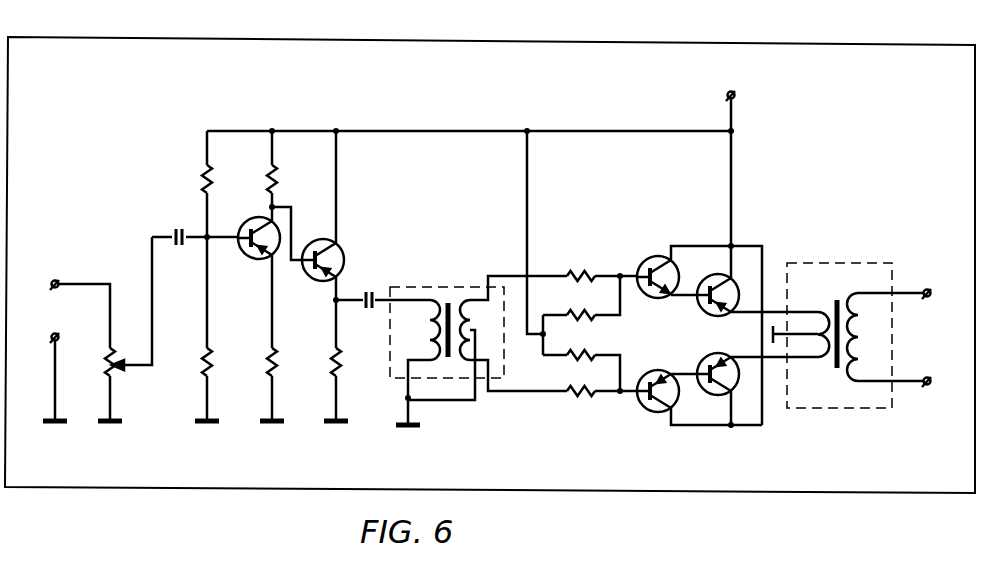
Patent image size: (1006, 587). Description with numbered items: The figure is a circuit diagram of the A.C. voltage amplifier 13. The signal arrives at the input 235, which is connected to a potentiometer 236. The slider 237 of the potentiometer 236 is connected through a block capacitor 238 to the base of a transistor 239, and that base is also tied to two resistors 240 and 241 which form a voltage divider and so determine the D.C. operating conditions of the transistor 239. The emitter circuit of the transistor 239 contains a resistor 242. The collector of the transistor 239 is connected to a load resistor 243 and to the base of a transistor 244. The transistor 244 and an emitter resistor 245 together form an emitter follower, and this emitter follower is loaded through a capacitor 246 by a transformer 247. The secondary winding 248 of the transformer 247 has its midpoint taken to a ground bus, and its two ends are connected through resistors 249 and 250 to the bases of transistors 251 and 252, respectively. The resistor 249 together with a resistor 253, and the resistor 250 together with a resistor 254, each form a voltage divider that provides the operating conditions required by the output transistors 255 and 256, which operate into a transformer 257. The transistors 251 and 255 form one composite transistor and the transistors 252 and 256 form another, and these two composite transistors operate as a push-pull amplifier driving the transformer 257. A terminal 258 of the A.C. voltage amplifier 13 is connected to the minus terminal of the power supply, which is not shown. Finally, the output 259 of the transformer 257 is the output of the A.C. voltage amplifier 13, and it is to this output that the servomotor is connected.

The A.C. voltage amplifier 13 is at (978, 136).
The input 235 is at (50, 299).
The potentiometer 236 is at (104, 355).
The slider 237 is at (143, 368).
The block capacitor 238 is at (172, 235).
The transistor 239 is at (262, 258).
The resistor 240 is at (203, 179).
The resistor 241 is at (203, 360).
The resistor 242 is at (269, 370).
The load resistor 243 is at (268, 184).
The transistor 244 is at (343, 257).
The emitter resistor 245 is at (333, 370).
The capacitor 246 is at (367, 304).
The transformer 247 is at (443, 299).
The secondary winding 248 is at (478, 360).
The resistor 249 is at (578, 275).
The resistor 250 is at (578, 395).
The transistor 251 is at (652, 259).
The transistor 252 is at (649, 410).
The resistor 253 is at (578, 314).
The resistor 254 is at (578, 358).
The output transistor 255 is at (712, 315).
The output transistor 256 is at (710, 392).
The transformer 257 is at (863, 260).
The terminal 258 is at (736, 95).
The output 259 is at (926, 375).